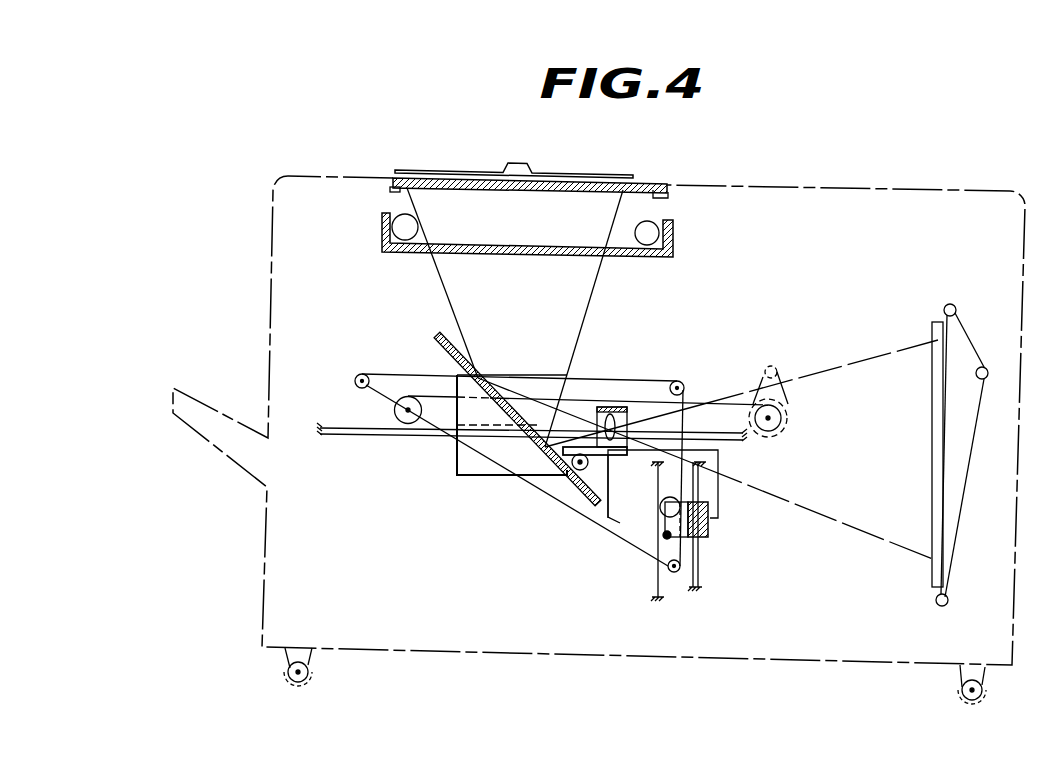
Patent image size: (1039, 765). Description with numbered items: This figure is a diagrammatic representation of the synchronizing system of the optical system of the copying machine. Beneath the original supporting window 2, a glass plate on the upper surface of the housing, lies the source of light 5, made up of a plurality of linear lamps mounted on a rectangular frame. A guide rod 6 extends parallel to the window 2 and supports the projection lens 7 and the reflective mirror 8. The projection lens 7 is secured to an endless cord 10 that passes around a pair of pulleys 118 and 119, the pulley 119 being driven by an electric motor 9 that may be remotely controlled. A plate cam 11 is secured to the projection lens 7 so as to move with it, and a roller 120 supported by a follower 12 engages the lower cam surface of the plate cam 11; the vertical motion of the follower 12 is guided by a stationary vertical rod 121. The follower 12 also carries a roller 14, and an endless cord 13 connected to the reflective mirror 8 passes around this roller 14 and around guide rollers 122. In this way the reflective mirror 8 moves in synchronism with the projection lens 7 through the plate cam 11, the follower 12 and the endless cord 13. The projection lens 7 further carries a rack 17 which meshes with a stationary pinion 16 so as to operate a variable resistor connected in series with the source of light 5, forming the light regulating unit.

The original supporting window 2 is at (463, 190).
The source of light 5 is at (385, 231).
The guide rod 6 is at (360, 436).
The projection lens 7 is at (612, 406).
The reflective mirror 8 is at (435, 337).
The electric motor 9 is at (770, 365).
The endless cord 10 is at (733, 397).
The plate cam 11 is at (716, 486).
The follower 12 is at (708, 535).
The endless cord 13 is at (543, 494).
The roller 14 is at (660, 508).
The stationary pinion 16 is at (520, 478).
The rack 17 is at (590, 457).
The pulley 118 is at (396, 413).
The pulley 119 is at (782, 423).
The roller 120 is at (665, 536).
The stationary vertical rod 121 is at (699, 577).
The guide rollers 122 is at (362, 375).